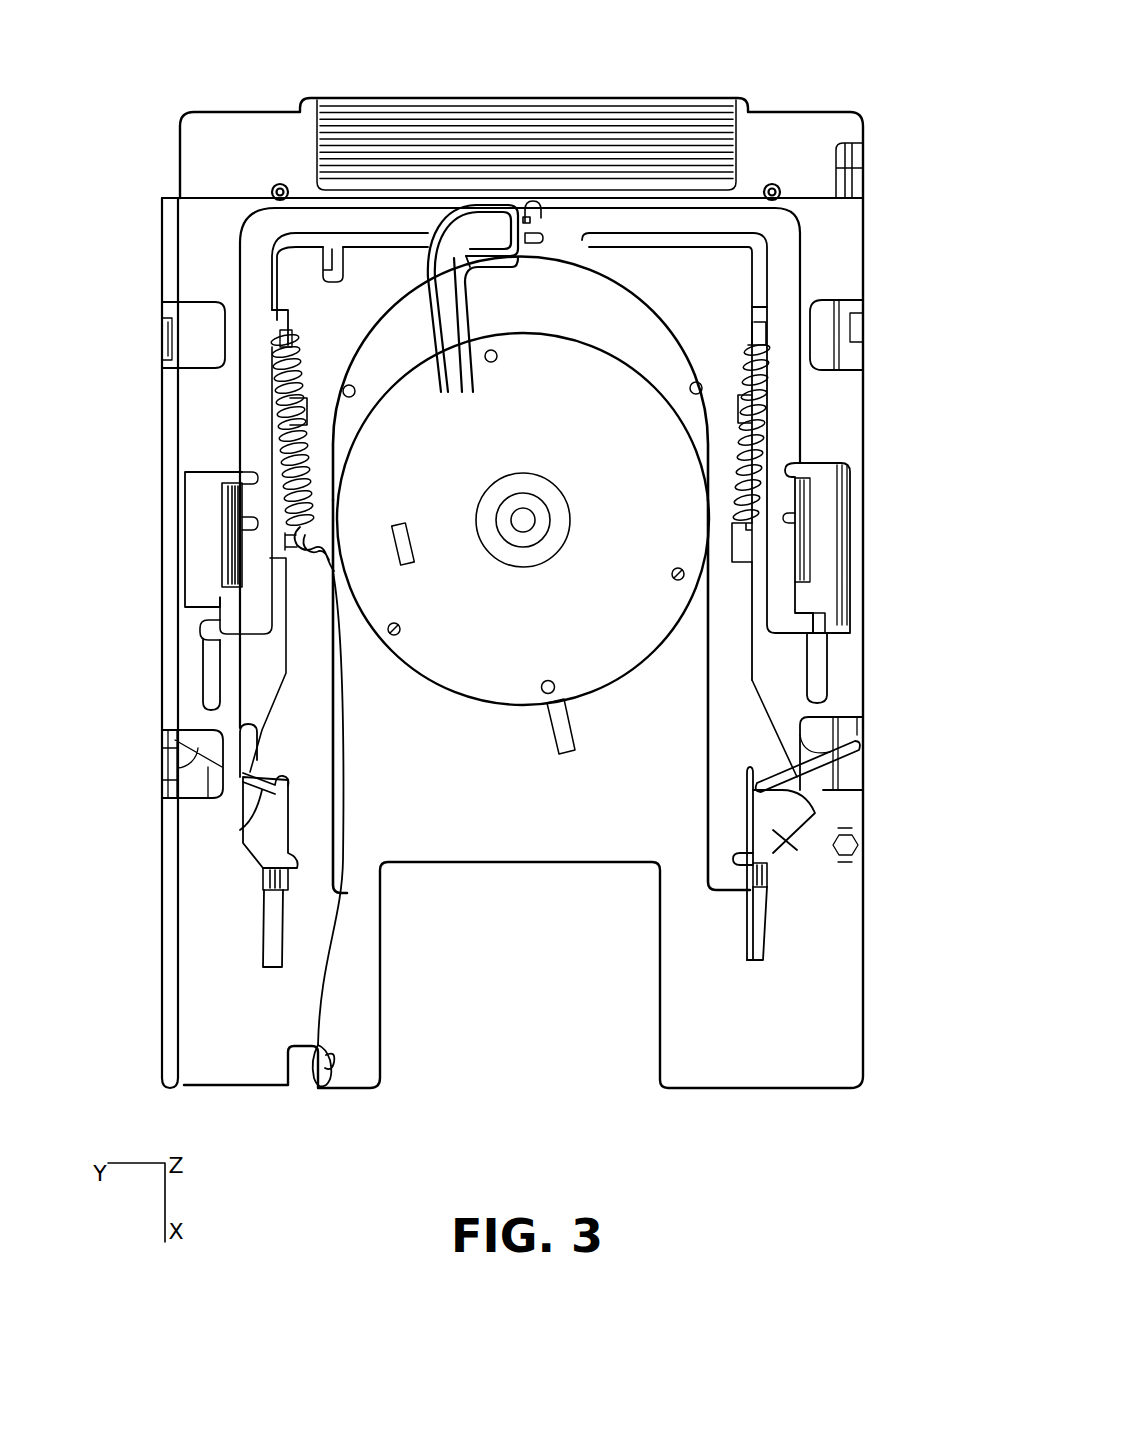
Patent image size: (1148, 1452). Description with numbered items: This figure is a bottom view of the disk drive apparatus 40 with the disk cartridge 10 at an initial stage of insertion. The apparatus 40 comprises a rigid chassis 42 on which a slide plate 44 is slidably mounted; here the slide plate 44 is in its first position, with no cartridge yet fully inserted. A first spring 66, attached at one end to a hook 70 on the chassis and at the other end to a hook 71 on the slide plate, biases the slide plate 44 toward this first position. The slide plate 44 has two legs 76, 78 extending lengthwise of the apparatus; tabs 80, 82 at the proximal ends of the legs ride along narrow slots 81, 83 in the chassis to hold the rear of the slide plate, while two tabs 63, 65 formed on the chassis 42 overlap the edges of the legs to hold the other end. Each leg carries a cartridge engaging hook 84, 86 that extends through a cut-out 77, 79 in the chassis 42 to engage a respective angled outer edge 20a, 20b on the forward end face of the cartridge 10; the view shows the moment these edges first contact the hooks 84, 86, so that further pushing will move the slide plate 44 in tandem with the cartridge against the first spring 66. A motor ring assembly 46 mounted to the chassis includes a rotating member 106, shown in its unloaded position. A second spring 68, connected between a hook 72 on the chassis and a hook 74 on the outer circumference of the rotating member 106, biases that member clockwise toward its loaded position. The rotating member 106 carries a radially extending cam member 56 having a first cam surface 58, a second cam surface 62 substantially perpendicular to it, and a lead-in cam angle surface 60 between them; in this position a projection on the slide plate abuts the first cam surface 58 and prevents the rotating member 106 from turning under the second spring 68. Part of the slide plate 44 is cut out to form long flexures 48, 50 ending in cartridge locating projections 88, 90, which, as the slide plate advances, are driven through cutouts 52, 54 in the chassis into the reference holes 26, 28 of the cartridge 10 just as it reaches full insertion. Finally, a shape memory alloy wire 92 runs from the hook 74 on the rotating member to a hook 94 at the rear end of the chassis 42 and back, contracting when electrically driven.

The disk cartridge 10 is at (755, 86).
The angled outer edge 20a is at (843, 757).
The angled outer edge 20b is at (198, 760).
The reference hole 26 is at (827, 640).
The reference hole 28 is at (205, 640).
The disk drive apparatus 40 is at (86, 189).
The chassis 42 is at (845, 220).
The slide plate 44 is at (608, 212).
The motor ring assembly 46 is at (335, 472).
The flexure 48 is at (790, 372).
The flexure 50 is at (247, 575).
The cutout 52 is at (830, 480).
The cutout 54 is at (200, 508).
The cam member 56 is at (415, 275).
The first cam surface 58 is at (514, 204).
The lead-in cam angle surface 60 is at (500, 243).
The second cam surface 62 is at (483, 270).
The tab 63 is at (748, 350).
The tab 65 is at (296, 352).
The first spring 66 is at (735, 468).
The second spring 68 is at (340, 468).
The hook 70 is at (765, 335).
The hook 71 is at (752, 565).
The hook 72 is at (283, 335).
The hook 74 is at (322, 570).
The leg 76 is at (730, 727).
The leg 78 is at (316, 726).
The cut-out 77 is at (263, 842).
The cut-out 79 is at (775, 852).
The tab 80 is at (265, 876).
The slot 81 is at (265, 970).
The tab 82 is at (770, 866).
The slot 83 is at (777, 940).
The cartridge engaging hook 84 is at (243, 826).
The cartridge engaging hook 86 is at (822, 810).
The cartridge locating projection 88 is at (828, 612).
The cartridge locating projection 90 is at (205, 614).
The shape memory alloy wire 92 is at (345, 782).
The hook 94 is at (325, 1085).
The rotating member 106 is at (551, 618).